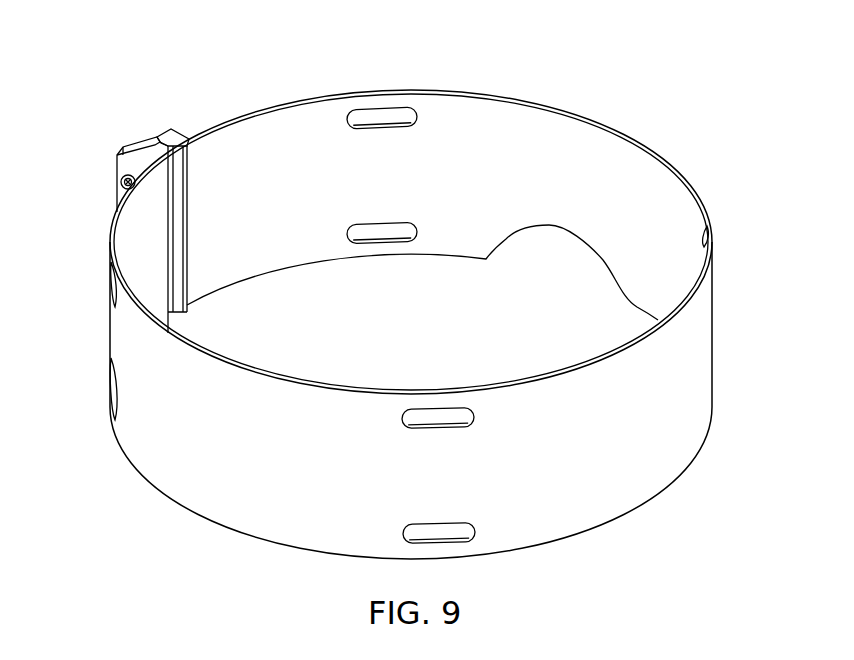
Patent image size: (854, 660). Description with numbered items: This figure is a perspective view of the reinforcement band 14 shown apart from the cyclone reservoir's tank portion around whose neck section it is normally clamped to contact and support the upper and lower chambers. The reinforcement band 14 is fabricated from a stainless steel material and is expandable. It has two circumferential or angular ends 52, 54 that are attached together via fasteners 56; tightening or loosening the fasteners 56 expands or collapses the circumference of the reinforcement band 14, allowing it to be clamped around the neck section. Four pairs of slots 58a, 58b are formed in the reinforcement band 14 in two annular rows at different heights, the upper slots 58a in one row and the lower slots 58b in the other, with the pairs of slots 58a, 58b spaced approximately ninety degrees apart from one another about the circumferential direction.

The reinforcement band 14 is at (632, 95).
The circumferential end 52 is at (166, 142).
The circumferential end 54 is at (148, 150).
The fastener 56 is at (123, 185).
The slot 58a is at (381, 107).
The slot 58b is at (437, 522).